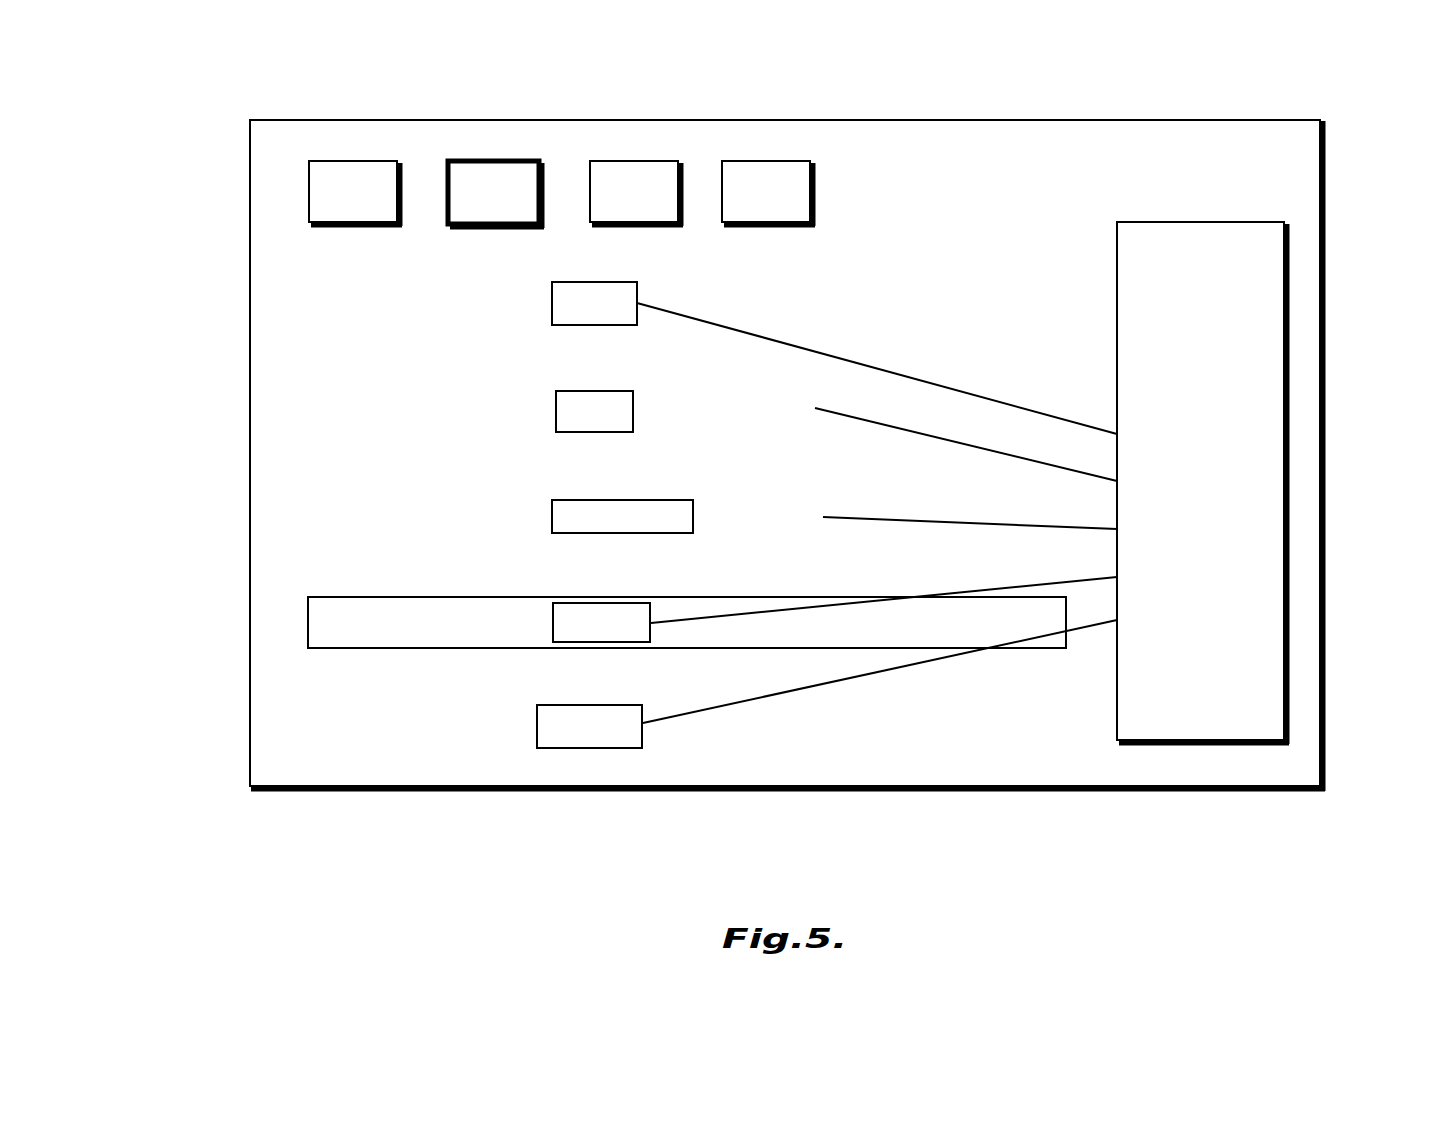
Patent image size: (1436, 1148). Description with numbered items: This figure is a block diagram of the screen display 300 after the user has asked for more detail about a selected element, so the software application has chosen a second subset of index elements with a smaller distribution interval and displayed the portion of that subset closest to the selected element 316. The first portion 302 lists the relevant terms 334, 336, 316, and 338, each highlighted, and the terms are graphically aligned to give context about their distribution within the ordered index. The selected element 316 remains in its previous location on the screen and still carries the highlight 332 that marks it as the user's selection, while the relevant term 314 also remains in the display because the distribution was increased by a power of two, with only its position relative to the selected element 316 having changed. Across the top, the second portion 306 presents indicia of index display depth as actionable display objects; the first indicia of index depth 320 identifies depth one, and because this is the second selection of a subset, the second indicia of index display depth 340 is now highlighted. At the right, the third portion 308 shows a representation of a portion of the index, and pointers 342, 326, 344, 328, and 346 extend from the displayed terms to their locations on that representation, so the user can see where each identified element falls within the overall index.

The screen display 300 is at (1284, 170).
The first portion 302 is at (328, 757).
The second portion 306 is at (808, 192).
The third portion 308 is at (1288, 592).
The relevant term 314 is at (556, 392).
The selected element 316 is at (598, 602).
The first indicia of index depth 320 is at (308, 192).
The pointer 326 is at (962, 445).
The pointer 328 is at (891, 603).
The highlight 332 is at (308, 622).
The relevant term 334 is at (607, 282).
The relevant term 336 is at (623, 500).
The relevant term 338 is at (590, 748).
The second indicia of index display depth 340 is at (488, 160).
The pointer 342 is at (786, 347).
The pointer 344 is at (903, 523).
The pointer 346 is at (776, 701).